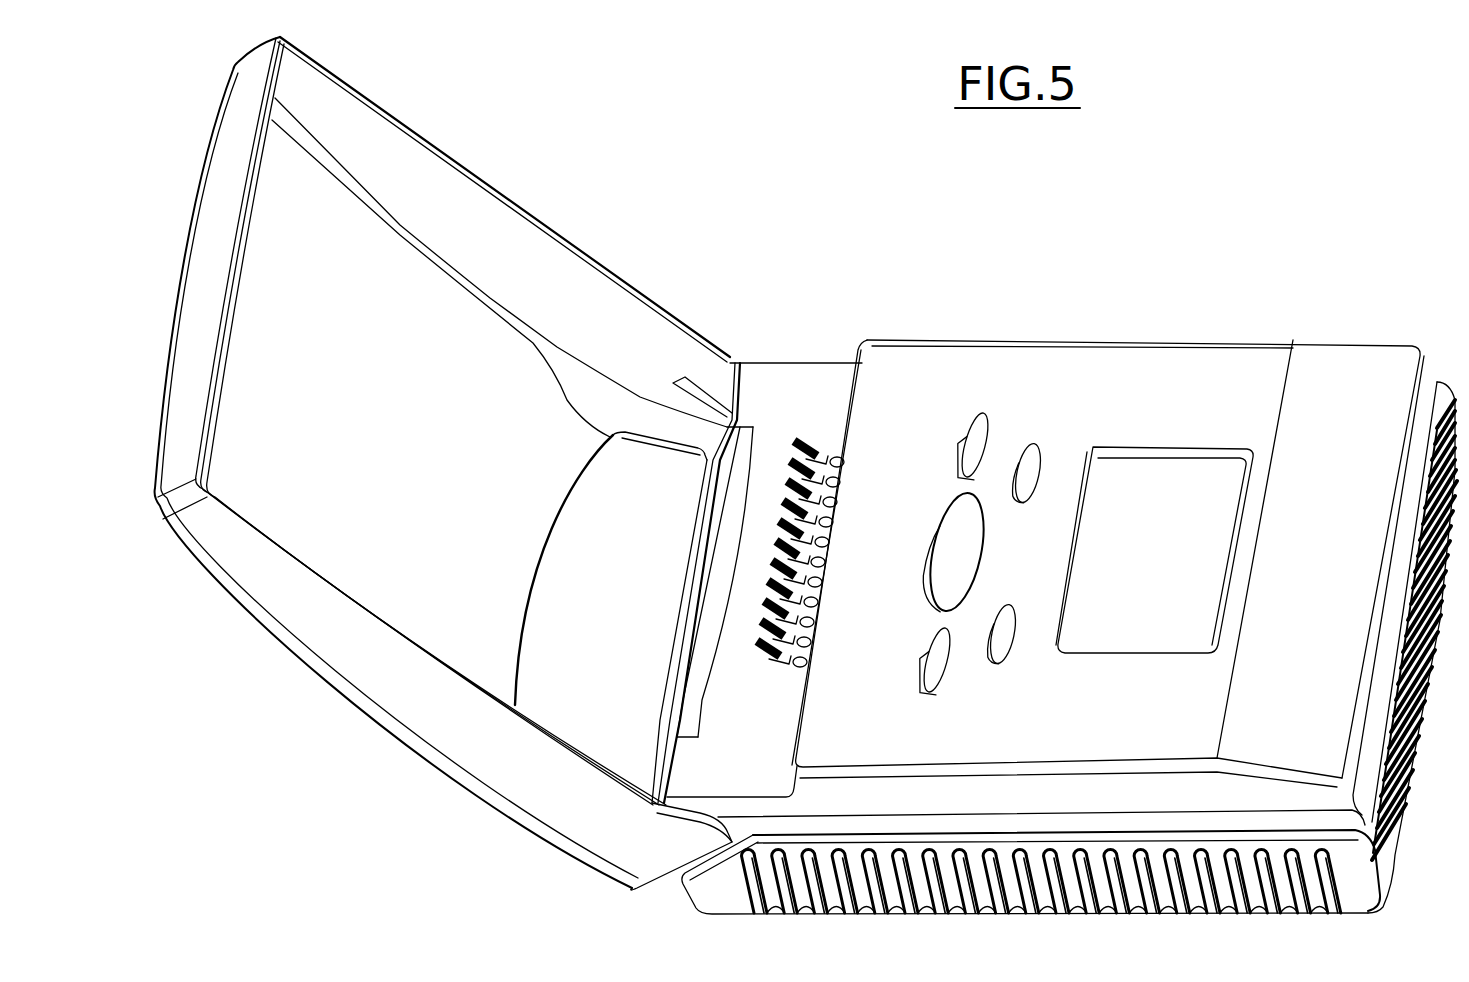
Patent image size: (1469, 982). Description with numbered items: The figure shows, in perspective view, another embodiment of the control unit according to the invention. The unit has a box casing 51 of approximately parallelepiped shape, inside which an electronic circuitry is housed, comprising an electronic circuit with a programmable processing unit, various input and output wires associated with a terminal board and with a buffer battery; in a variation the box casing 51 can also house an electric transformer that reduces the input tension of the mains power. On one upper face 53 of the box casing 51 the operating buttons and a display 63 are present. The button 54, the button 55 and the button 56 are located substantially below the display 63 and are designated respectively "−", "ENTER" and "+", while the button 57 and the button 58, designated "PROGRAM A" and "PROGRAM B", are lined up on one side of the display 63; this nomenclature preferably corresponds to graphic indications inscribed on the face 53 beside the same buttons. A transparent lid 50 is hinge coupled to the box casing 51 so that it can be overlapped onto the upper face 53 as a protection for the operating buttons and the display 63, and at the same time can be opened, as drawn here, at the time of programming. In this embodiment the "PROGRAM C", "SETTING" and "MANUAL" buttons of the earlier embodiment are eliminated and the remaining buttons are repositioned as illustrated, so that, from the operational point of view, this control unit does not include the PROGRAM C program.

The transparent lid 50 is at (523, 250).
The box casing 51 is at (1062, 568).
The upper face 53 is at (1065, 728).
The button 54 is at (960, 447).
The button 55 is at (953, 550).
The button 56 is at (925, 652).
The button 57 is at (1035, 455).
The button 58 is at (1007, 620).
The display 63 is at (1172, 582).